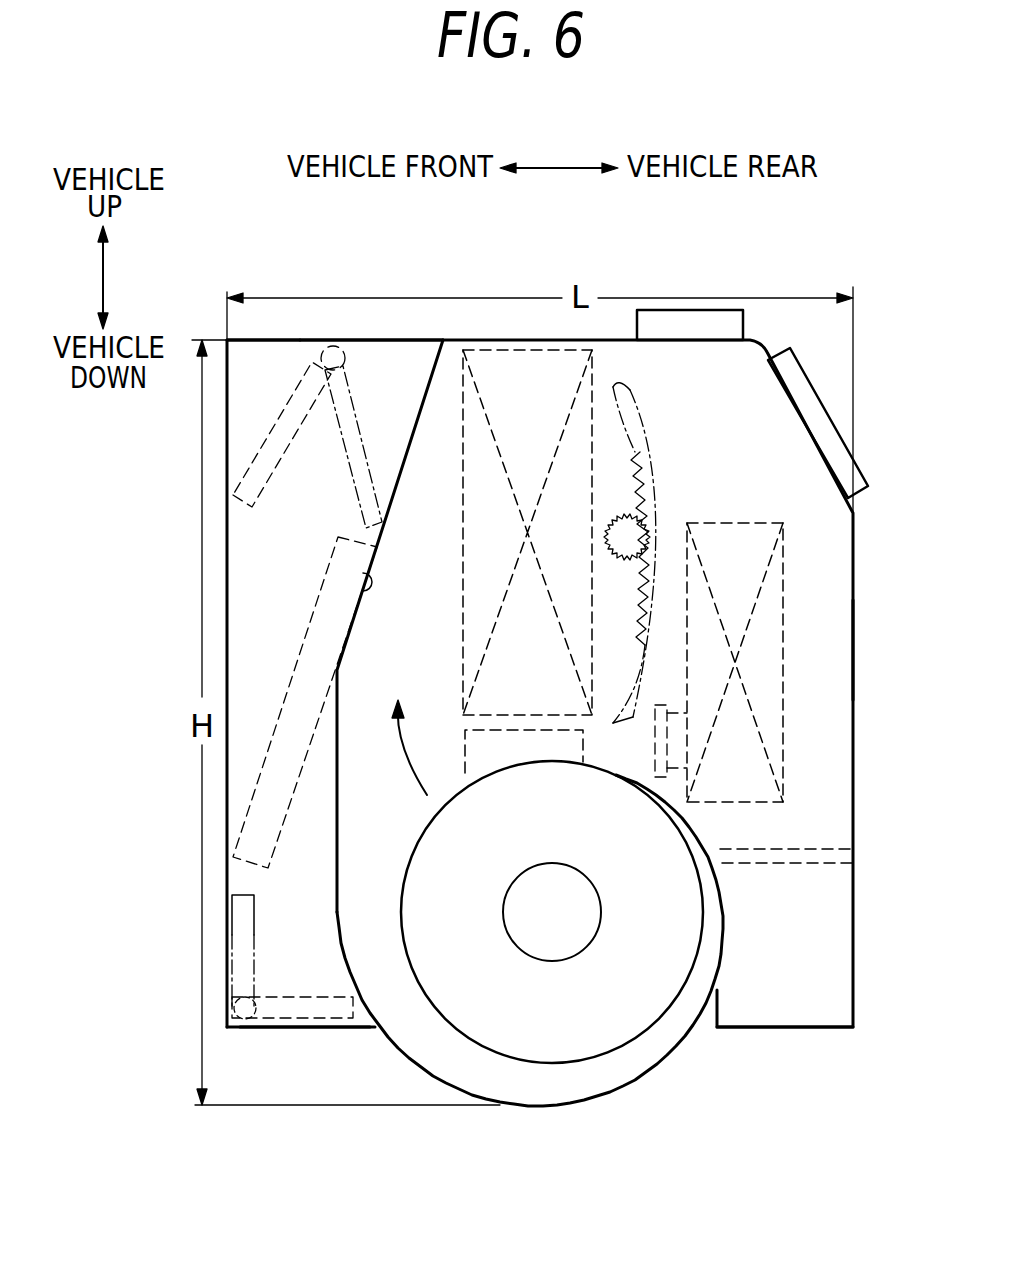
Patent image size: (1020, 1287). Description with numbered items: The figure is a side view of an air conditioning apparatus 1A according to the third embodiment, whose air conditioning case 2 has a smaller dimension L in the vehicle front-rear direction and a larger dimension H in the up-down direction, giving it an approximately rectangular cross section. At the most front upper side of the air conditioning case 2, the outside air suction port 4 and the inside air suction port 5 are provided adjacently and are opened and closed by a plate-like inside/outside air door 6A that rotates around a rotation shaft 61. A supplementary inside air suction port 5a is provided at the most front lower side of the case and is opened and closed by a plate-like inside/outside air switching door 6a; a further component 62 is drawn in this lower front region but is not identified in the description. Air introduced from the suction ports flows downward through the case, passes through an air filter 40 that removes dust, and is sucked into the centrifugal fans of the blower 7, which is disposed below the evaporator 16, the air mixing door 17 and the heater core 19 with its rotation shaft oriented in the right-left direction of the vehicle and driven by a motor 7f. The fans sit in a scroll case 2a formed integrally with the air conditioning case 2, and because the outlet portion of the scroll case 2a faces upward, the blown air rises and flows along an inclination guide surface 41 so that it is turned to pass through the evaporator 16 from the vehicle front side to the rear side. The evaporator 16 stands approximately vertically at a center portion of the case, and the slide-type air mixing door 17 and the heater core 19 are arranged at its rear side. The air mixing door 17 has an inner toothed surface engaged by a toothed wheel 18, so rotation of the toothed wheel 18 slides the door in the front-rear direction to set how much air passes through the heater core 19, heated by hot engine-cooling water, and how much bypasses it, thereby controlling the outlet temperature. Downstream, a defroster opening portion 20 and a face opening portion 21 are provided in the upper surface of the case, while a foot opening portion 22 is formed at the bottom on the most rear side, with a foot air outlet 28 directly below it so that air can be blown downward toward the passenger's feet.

The air conditioning apparatus 1A is at (858, 670).
The air conditioning case 2 is at (828, 640).
The scroll case 2a is at (673, 1058).
The outside air suction port 4 is at (250, 360).
The inside air suction port 5 is at (378, 358).
The supplementary inside air suction port 5a is at (300, 1027).
The inside/outside air door 6A is at (353, 498).
The inside/outside air switching door 6a is at (338, 1008).
The blower 7 is at (557, 986).
The motor 7f is at (570, 942).
The evaporator 16 is at (500, 365).
The air mixing door 17 is at (657, 480).
The toothed wheel 18 is at (625, 520).
The heater core 19 is at (777, 612).
The defroster opening portion 20 is at (667, 320).
The face opening portion 21 is at (832, 417).
The foot opening portion 22 is at (803, 849).
The foot air outlet 28 is at (772, 1027).
The air filter 40 is at (305, 633).
The inclination guide surface 41 is at (366, 582).
The rotation shaft 61 is at (330, 350).
The door seal rib 62 is at (244, 1013).